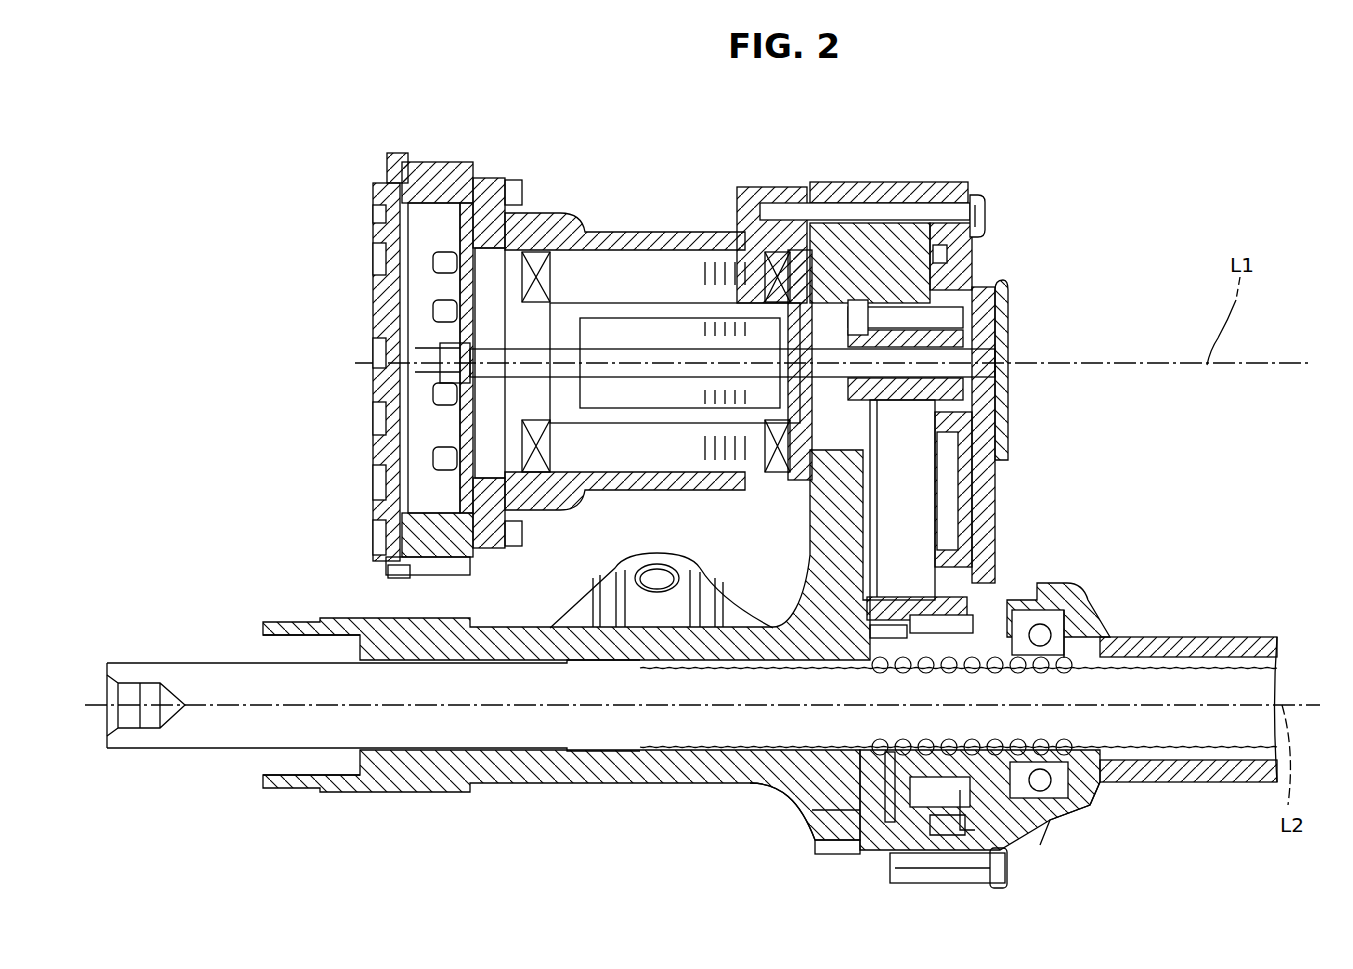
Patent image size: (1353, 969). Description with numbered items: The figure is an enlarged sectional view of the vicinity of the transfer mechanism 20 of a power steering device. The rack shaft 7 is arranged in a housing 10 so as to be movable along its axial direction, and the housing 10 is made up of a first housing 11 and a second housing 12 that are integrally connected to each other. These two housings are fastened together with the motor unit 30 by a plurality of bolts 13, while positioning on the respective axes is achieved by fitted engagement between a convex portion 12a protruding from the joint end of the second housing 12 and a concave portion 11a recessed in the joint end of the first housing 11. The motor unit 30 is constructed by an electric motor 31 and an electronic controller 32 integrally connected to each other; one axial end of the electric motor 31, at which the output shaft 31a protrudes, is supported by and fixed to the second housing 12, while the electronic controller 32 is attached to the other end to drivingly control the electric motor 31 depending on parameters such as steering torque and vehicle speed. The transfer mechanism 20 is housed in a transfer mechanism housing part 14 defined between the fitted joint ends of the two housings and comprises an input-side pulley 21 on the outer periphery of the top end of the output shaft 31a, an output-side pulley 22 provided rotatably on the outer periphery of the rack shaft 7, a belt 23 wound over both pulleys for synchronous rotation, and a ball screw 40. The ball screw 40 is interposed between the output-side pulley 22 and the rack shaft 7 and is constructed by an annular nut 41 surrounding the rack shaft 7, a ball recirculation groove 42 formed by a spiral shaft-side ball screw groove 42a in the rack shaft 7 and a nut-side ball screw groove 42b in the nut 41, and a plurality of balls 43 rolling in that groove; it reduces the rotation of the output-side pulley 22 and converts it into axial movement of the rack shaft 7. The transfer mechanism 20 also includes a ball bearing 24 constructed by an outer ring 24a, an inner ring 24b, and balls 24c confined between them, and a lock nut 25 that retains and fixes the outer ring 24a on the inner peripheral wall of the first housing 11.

The rack shaft 7 is at (197, 740).
The housing 10 is at (770, 669).
The first housing 11 is at (1220, 787).
The concave portion 11a is at (967, 830).
The second housing 12 is at (418, 792).
The convex portion 12a is at (943, 827).
The bolts 13 is at (986, 210).
The transfer mechanism housing part 14 is at (1008, 293).
The transfer mechanism 20 is at (1022, 462).
The input-side pulley 21 is at (968, 382).
The output-side pulley 22 is at (975, 560).
The belt 23 is at (1000, 575).
The ball bearing 24 is at (1122, 597).
The outer ring 24a is at (1030, 583).
The inner ring 24b is at (1060, 640).
The balls 24c is at (1033, 603).
The lock nut 25 is at (1007, 800).
The motor unit 30 is at (724, 321).
The electric motor 31 is at (607, 228).
The output shaft 31a is at (967, 350).
The electronic controller 32 is at (478, 170).
The ball screw 40 is at (913, 590).
The nut 41 is at (887, 818).
The ball recirculation groove 42 is at (766, 835).
The shaft-side ball screw groove 42a is at (705, 772).
The nut-side ball screw groove 42b is at (807, 813).
The balls 43 is at (827, 855).